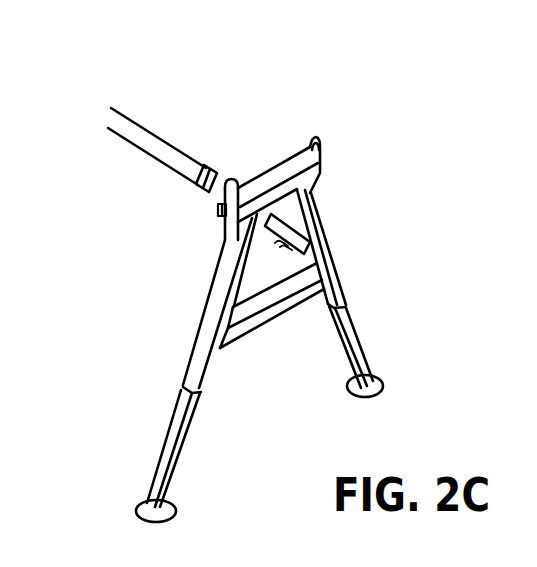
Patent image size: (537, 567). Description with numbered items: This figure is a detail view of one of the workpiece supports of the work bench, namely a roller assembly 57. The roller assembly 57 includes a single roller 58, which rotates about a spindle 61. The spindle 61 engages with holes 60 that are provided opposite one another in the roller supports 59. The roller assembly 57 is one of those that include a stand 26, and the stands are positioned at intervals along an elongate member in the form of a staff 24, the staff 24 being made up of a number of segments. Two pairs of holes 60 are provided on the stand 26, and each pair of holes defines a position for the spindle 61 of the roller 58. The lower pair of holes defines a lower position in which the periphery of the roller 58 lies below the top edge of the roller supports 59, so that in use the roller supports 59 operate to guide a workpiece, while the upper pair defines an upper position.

The staff 24 is at (148, 138).
The stand 26 is at (358, 241).
The roller assembly 57 is at (267, 157).
The roller 58 is at (283, 152).
The roller support 59 is at (318, 165).
The hole 60 is at (222, 220).
The spindle 61 is at (218, 206).